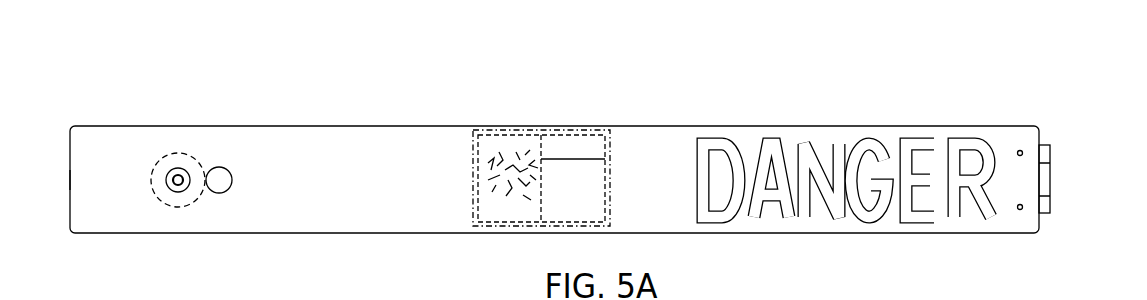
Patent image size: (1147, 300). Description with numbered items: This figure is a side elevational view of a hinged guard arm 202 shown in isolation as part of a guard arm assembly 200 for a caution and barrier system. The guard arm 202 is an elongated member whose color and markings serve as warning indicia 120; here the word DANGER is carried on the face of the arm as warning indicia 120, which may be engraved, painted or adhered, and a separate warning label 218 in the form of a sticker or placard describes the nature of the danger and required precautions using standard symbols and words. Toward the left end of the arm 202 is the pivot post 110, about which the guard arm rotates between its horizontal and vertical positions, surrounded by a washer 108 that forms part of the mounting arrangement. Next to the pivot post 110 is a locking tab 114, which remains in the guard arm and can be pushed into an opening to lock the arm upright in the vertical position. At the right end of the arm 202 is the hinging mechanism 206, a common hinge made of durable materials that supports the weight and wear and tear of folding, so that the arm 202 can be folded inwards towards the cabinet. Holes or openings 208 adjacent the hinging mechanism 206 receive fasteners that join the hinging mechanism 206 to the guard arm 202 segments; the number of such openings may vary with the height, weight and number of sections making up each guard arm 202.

The cover assembly 200 is at (1024, 73).
The hinged guard arm 202 is at (367, 126).
The washer 108 is at (178, 207).
The pivot post 110 is at (178, 168).
The locking tab 114 is at (214, 168).
The warning label 218 is at (517, 130).
The warning indicia 120 is at (866, 130).
The holes or openings 208 is at (1022, 152).
The hinging mechanism 206 is at (1050, 178).